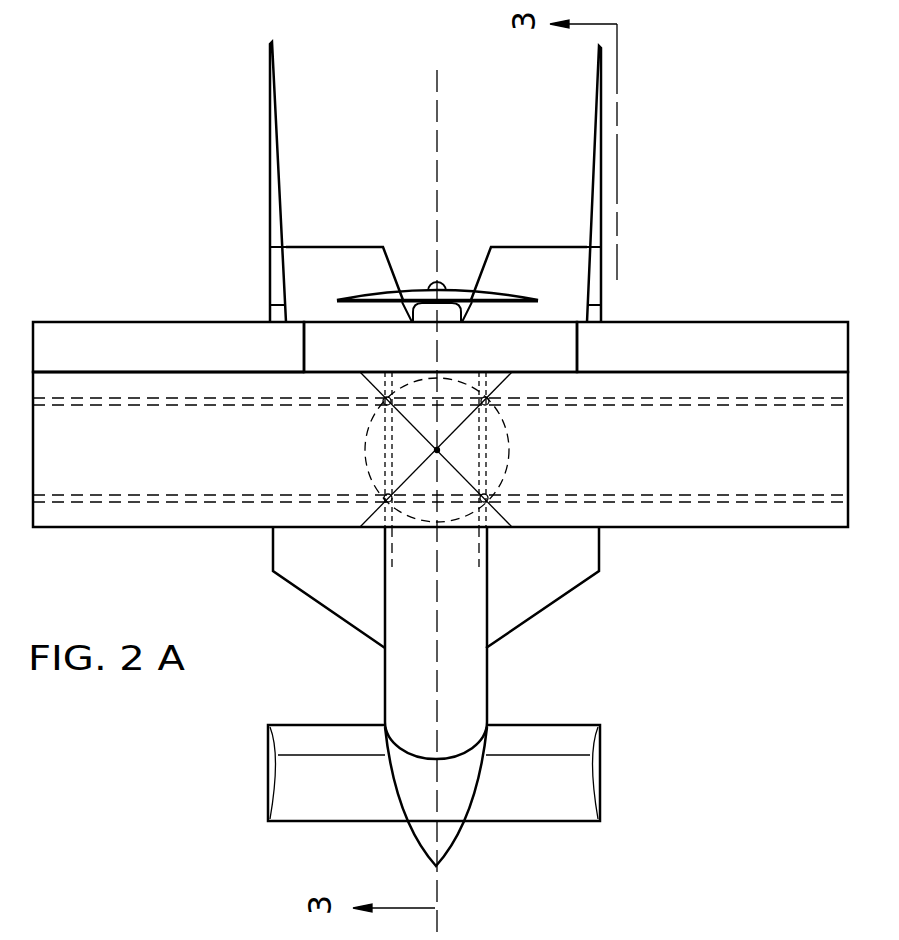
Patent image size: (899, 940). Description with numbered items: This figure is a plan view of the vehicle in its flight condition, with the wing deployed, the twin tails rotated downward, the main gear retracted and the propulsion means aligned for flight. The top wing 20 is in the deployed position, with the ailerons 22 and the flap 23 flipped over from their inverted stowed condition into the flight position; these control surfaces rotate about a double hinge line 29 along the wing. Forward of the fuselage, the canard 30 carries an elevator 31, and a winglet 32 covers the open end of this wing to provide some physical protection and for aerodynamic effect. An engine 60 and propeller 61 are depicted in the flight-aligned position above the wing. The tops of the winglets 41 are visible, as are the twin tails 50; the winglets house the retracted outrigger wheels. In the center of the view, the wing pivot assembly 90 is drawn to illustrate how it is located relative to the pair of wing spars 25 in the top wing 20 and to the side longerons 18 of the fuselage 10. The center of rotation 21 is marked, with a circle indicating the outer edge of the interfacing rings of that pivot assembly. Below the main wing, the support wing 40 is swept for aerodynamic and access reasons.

The fuselage 10 is at (446, 629).
The side longerons 18 is at (477, 543).
The top wing 20 is at (182, 462).
The center of rotation 21 is at (433, 448).
The ailerons 22 is at (157, 358).
The flap 23 is at (462, 358).
The wing spars 25 is at (113, 402).
The double hinge line 29 is at (61, 370).
The canard 30 is at (377, 823).
The elevator 31 is at (343, 725).
The winglet 32 is at (268, 797).
The support wing 40 is at (305, 570).
The winglets 41 is at (603, 292).
The twin tails 50 is at (602, 129).
The engine 60 is at (465, 310).
The propeller 61 is at (483, 288).
The wing pivot assembly 90 is at (510, 444).